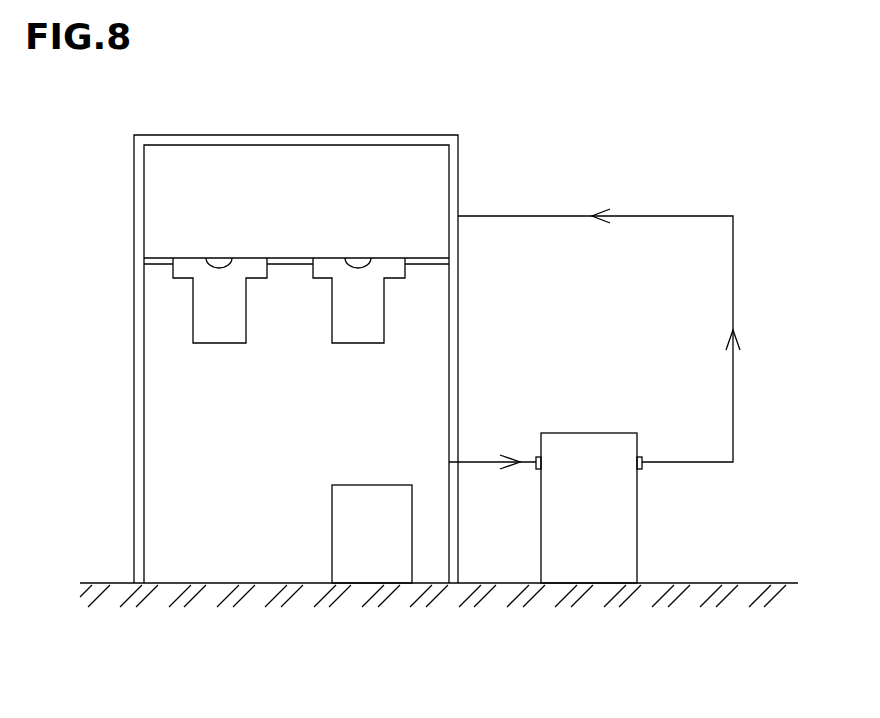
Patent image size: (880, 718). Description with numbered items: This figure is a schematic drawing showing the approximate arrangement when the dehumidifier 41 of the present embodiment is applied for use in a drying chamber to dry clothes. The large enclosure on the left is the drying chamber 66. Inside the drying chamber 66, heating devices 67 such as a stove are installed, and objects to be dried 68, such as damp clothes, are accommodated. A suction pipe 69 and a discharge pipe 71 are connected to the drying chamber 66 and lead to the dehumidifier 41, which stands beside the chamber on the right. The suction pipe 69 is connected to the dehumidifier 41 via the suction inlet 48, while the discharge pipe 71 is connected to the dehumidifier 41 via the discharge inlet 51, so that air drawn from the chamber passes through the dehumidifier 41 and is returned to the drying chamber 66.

The drying chamber 66 is at (267, 135).
The objects to be dried 68 is at (205, 343).
The heating devices 67 is at (332, 510).
The suction pipe 69 is at (490, 460).
The discharge pipe 71 is at (515, 216).
The dehumidifier 41 is at (638, 513).
The suction inlet 48 is at (537, 470).
The discharge inlet 51 is at (643, 457).